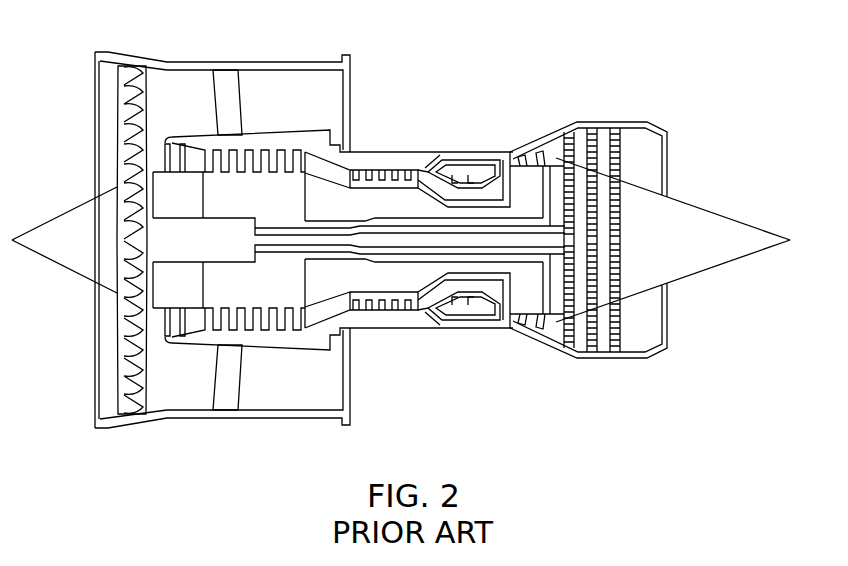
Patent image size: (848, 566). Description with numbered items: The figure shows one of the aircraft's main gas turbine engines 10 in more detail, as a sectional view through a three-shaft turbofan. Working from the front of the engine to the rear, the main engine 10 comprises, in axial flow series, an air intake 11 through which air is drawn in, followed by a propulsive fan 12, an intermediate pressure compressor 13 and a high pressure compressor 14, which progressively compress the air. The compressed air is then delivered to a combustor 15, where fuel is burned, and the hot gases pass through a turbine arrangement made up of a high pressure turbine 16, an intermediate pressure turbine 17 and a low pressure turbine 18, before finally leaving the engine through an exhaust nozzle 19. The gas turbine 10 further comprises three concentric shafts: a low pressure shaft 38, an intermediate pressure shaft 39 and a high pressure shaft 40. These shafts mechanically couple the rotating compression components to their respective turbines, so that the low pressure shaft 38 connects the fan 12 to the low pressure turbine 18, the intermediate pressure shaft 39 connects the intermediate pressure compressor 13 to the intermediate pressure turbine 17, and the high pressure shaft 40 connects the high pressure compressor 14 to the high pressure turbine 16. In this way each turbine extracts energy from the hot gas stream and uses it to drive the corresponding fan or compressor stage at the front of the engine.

The main gas turbine engine 10 is at (452, 78).
The air intake 11 is at (94, 97).
The propulsive fan 12 is at (147, 110).
The intermediate pressure compressor 13 is at (282, 150).
The high pressure compressor 14 is at (373, 169).
The combustor 15 is at (467, 168).
The high pressure turbine 16 is at (507, 150).
The intermediate pressure turbine 17 is at (550, 138).
The low pressure turbine 18 is at (622, 142).
The exhaust nozzle 19 is at (655, 346).
The low pressure shaft 38 is at (404, 243).
The intermediate pressure shaft 39 is at (326, 254).
The high pressure shaft 40 is at (472, 290).